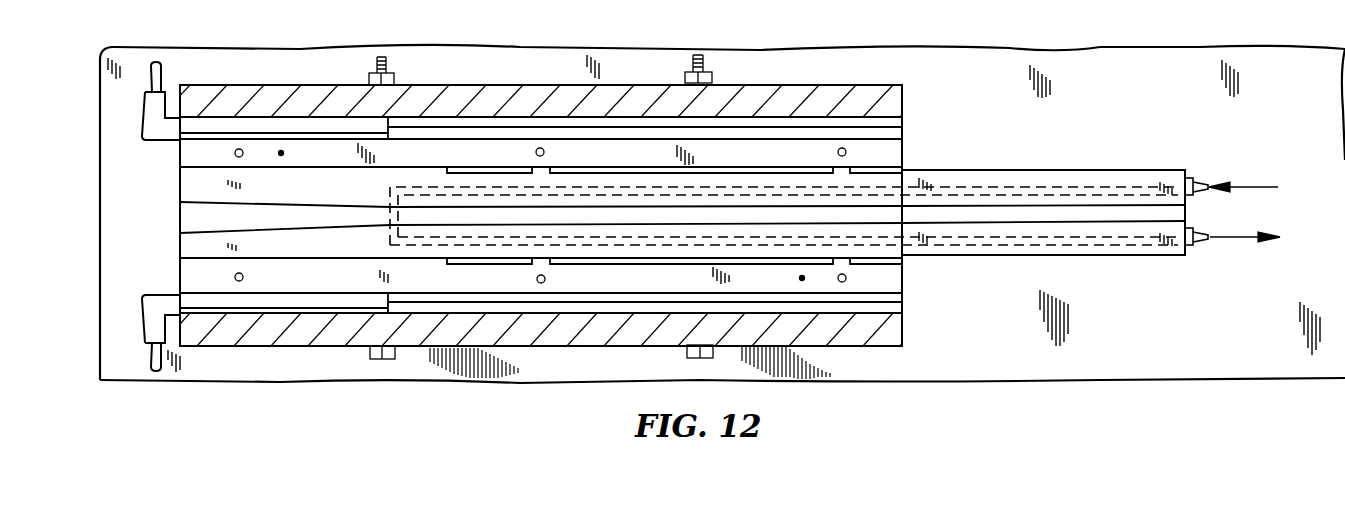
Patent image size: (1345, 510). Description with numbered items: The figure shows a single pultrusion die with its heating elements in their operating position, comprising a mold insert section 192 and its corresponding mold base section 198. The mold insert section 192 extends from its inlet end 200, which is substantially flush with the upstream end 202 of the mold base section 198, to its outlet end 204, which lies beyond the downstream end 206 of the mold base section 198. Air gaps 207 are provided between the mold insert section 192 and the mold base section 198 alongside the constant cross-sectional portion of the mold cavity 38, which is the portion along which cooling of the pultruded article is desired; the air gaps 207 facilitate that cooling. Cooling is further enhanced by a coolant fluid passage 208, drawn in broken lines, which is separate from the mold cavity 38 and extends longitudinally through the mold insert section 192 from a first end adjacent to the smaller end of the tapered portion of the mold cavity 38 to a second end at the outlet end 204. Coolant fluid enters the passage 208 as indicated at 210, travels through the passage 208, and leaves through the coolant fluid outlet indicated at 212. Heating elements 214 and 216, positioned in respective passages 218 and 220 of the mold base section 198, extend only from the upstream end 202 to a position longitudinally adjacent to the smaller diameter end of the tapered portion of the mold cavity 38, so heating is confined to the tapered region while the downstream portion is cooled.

The mold cavity 38 is at (200, 217).
The mold insert section 192 is at (980, 170).
The mold base section 198 is at (183, 166).
The inlet end 200 is at (182, 211).
The upstream end 202 is at (166, 282).
The outlet end 204 is at (1188, 202).
The downstream end 206 is at (910, 277).
The air gaps 207 is at (900, 167).
The coolant fluid passage 208 is at (1066, 176).
The coolant fluid inlet 210 is at (1248, 186).
The coolant fluid outlet 212 is at (1238, 239).
The heating element 214 is at (282, 127).
The heating element 216 is at (292, 303).
The passage 218 is at (900, 119).
The passage 220 is at (900, 307).